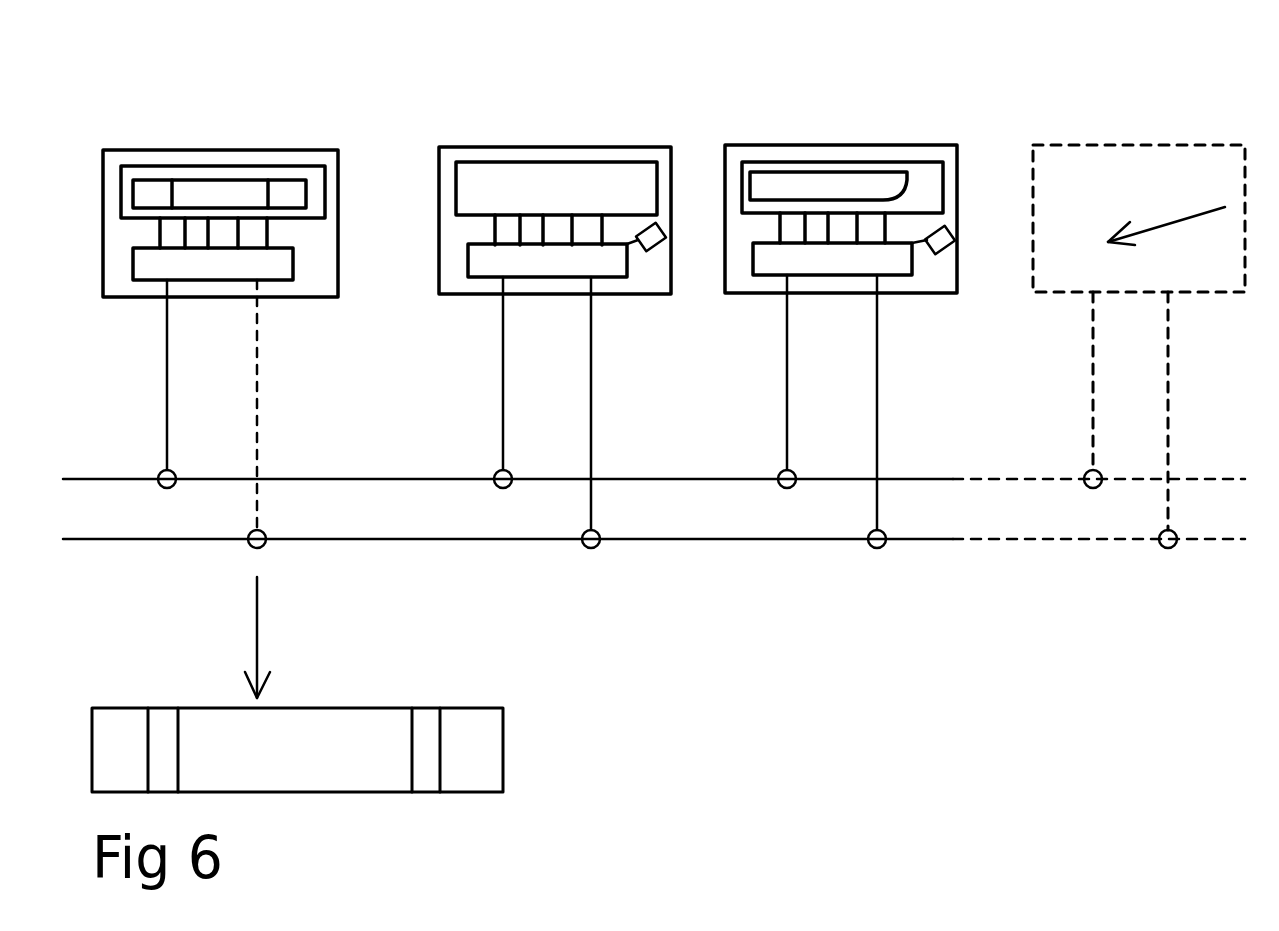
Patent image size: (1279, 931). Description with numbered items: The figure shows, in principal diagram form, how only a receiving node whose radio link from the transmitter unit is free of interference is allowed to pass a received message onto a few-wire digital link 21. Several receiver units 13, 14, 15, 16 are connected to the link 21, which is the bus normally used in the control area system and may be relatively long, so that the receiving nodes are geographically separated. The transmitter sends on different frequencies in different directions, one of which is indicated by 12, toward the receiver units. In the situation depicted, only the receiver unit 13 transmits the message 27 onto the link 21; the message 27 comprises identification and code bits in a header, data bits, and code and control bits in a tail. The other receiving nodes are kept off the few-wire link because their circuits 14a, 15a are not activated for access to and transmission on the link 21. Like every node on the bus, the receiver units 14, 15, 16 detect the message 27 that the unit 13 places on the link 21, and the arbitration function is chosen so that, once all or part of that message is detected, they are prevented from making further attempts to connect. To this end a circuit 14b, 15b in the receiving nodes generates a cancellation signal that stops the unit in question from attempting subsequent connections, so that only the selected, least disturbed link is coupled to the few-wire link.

The transmission direction 12 is at (1218, 175).
The receiver unit 13 is at (333, 157).
The receiver unit 14 is at (580, 296).
The circuit 14a is at (516, 161).
The circuit 14b is at (691, 290).
The receiver unit 15 is at (887, 288).
The circuit 15a is at (887, 344).
The circuit 15b is at (980, 304).
The receiver unit 16 is at (1087, 182).
The few-wire link 21 is at (368, 476).
The message 27 is at (280, 765).